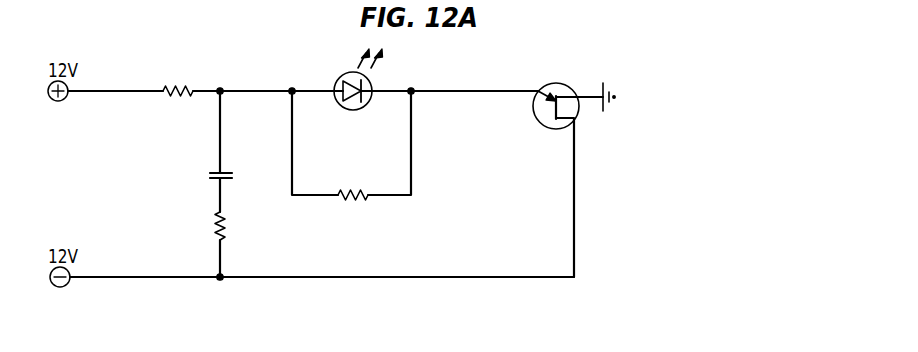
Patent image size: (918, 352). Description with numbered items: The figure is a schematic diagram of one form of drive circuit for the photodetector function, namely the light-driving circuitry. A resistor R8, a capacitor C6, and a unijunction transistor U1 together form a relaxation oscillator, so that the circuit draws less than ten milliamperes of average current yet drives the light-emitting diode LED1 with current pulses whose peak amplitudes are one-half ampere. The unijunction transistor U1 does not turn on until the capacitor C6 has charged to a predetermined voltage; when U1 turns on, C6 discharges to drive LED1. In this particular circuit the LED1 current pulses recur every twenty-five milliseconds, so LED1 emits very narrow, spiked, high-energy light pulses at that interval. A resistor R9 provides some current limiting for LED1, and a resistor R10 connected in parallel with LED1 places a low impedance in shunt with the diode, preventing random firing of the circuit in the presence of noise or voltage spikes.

The resistor R8 is at (178, 77).
The capacitor C6 is at (207, 151).
The resistor R9 is at (205, 244).
The resistor R10 is at (351, 145).
The light-emitting diode LED1 is at (357, 93).
The unijunction transistor U1 is at (545, 114).